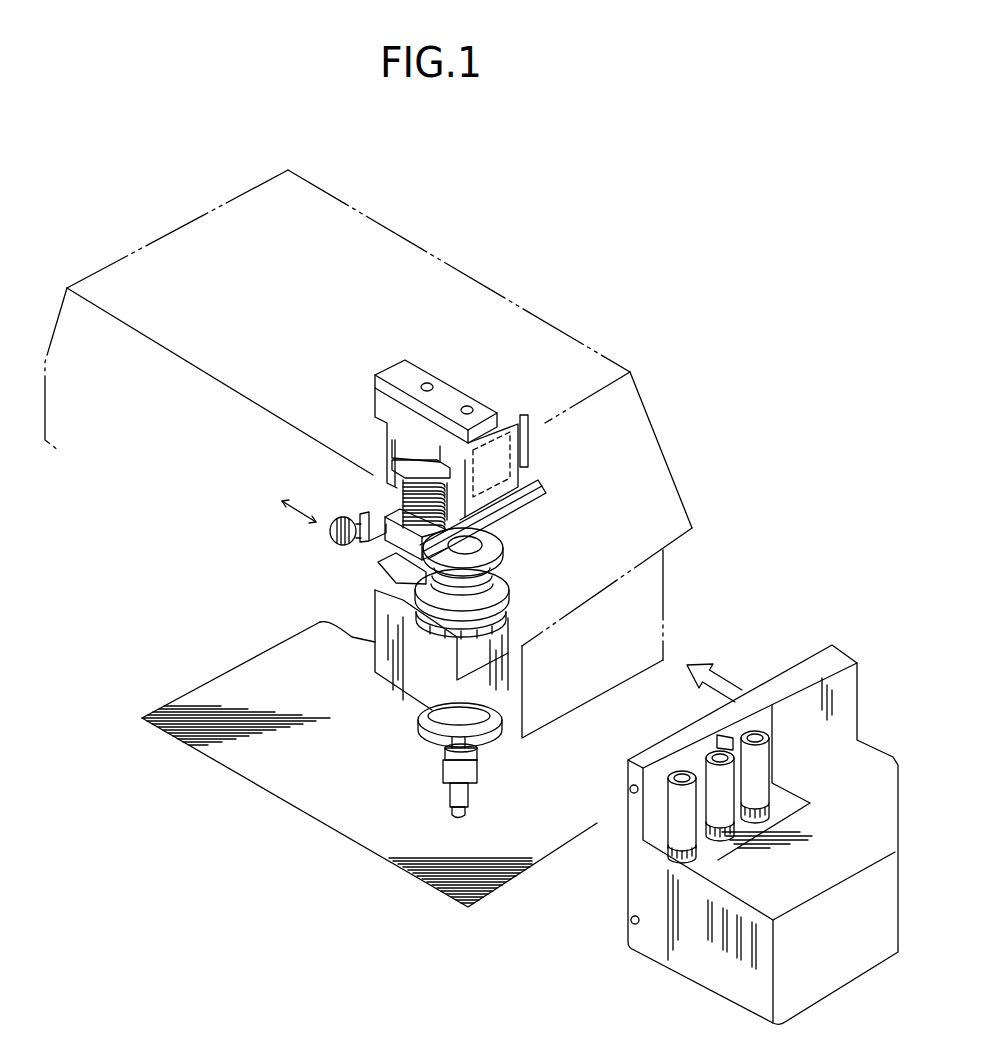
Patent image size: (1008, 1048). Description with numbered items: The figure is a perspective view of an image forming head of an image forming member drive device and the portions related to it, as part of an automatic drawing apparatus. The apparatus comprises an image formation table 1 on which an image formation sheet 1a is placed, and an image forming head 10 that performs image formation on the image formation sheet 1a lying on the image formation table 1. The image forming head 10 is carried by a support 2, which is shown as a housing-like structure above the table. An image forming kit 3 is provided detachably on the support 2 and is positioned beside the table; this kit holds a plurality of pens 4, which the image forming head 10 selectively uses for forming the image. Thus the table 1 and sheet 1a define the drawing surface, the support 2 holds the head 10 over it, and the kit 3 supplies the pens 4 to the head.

The image formation table 1 is at (369, 778).
The image formation sheet 1a is at (263, 907).
The support 2 is at (653, 410).
The image forming kit 3 is at (898, 803).
The pens 4 is at (755, 770).
The image forming head 10 is at (558, 522).